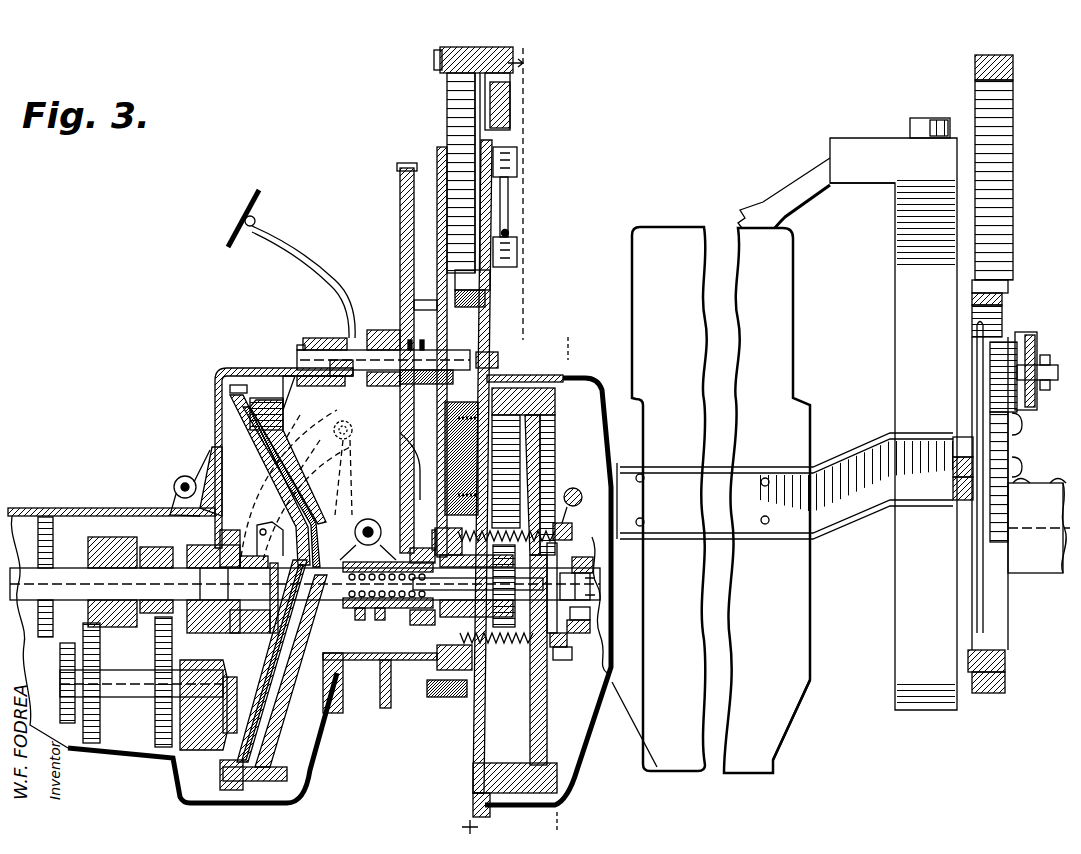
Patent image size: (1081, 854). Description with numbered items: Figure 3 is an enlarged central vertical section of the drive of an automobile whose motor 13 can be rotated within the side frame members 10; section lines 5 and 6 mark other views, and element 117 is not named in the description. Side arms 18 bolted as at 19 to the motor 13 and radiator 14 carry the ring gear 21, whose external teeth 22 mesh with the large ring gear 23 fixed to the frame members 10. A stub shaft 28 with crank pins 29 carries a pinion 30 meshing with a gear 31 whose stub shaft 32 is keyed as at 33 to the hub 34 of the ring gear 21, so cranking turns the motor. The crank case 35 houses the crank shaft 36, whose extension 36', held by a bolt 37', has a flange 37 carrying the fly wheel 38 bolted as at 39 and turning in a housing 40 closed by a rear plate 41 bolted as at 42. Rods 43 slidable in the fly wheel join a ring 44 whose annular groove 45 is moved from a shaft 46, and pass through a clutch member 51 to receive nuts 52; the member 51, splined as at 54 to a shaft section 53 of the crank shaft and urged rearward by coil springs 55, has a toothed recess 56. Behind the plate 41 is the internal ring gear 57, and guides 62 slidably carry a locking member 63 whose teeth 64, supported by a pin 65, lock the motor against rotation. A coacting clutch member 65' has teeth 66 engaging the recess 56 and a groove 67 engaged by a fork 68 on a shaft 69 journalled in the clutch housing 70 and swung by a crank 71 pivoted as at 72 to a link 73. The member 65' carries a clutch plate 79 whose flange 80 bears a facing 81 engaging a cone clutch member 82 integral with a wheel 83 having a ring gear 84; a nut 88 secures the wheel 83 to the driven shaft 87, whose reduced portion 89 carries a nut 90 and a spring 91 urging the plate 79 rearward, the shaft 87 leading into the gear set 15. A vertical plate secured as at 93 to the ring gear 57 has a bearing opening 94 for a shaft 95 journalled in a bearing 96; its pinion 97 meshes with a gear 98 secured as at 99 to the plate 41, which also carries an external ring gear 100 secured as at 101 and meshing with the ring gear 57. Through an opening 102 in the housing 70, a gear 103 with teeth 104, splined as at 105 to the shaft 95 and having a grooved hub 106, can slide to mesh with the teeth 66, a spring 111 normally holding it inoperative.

The section line 5- 5 is at (489, 443).
The section line 6- 6 is at (566, 579).
The side frame members 10 is at (1045, 576).
The motor 13 is at (673, 238).
The radiator 14 is at (895, 340).
The gear set 15 is at (88, 508).
The side arms 18 is at (820, 466).
The bolts 19 is at (762, 478).
The ring gear 21 is at (972, 303).
The external teeth 22 is at (972, 289).
The ring gear 23 is at (975, 70).
The stub shaft 28 is at (1040, 385).
The pins 29 is at (1046, 355).
The pinion 30 is at (1005, 342).
The gear 31 is at (990, 410).
The stub shaft 32 is at (958, 455).
The key 33 is at (960, 470).
The hub 34 is at (962, 490).
The crank case 35 is at (798, 700).
The crank shaft 36 is at (612, 563).
The extension 36' is at (608, 586).
The flange 37 is at (610, 633).
The bolt 37' is at (627, 582).
The fly wheel 38 is at (543, 692).
The bolts 39 is at (590, 612).
The housing 40 is at (592, 738).
The rear closure plate 41 is at (492, 325).
The bolts 42 is at (498, 362).
The rods 43 is at (510, 530).
The ring 44 is at (562, 537).
The annular groove 45 is at (570, 520).
The shaft 46 is at (573, 488).
The clutch member 51 is at (440, 670).
The nuts 52 is at (412, 515).
The shaft section 53 is at (535, 640).
The splines 54 is at (506, 566).
The coil springs 55 is at (497, 680).
The toothed recess 56 is at (395, 660).
The internal ring gear 57 is at (445, 78).
The guides 62 is at (518, 160).
The locking member 63 is at (509, 200).
The teeth 64 is at (512, 90).
The pin 65 is at (527, 224).
The coacting clutch member 65' is at (377, 626).
The teeth 66 is at (420, 626).
The peripheral groove 67 is at (352, 618).
The fork 68 is at (353, 532).
The transverse operating shaft 69 is at (360, 520).
The clutch housing 70 is at (235, 368).
The crank 71 is at (359, 476).
The pivot 72 is at (343, 419).
The link 73 is at (316, 440).
The clutch plate 79 is at (298, 402).
The flange 80 is at (300, 380).
The clutch facing 81 is at (290, 775).
The clutch member 82 is at (257, 804).
The wheel 83 is at (266, 696).
The ring gear 84 is at (207, 792).
The driven shaft 87 is at (276, 630).
The nut 88 is at (261, 536).
The reduced portion 89 is at (372, 618).
The nut 90 is at (432, 545).
The spring 91 is at (290, 676).
The securing means 93 is at (440, 697).
The bearing opening 94 is at (435, 306).
The shaft 95 is at (300, 346).
The bearing 96 is at (313, 338).
The pinion 97 is at (436, 320).
The gear 98 is at (452, 435).
The securing means 99 is at (505, 410).
The external ring gear 100 is at (490, 280).
The securing means 101 is at (490, 300).
The opening 102 is at (375, 385).
The gear 103 is at (398, 186).
The teeth 104 is at (403, 166).
The spline 105 is at (383, 359).
The peripheral groove 106 is at (382, 330).
The spring 111 is at (411, 352).
The hand lever 117 is at (248, 210).